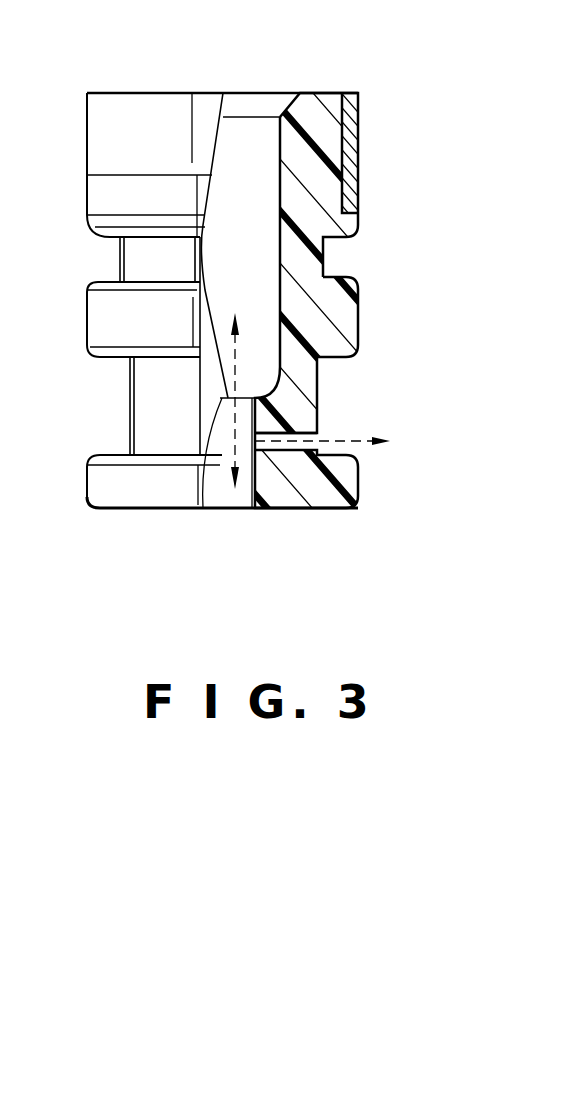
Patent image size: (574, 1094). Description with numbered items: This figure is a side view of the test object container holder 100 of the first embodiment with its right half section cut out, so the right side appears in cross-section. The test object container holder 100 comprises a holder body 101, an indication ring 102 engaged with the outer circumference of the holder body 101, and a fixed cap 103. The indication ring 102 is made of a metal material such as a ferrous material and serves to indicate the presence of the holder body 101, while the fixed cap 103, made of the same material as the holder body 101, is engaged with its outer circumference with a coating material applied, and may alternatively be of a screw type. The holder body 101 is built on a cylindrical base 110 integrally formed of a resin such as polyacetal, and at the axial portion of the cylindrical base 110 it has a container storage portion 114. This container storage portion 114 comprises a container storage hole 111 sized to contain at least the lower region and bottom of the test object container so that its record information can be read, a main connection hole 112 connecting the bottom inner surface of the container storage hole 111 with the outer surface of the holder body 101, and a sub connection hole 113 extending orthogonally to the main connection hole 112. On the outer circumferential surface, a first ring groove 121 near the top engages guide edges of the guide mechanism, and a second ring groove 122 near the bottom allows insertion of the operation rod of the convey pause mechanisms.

The test object container holder 100 is at (181, 72).
The cylindrical base 110 is at (302, 105).
The holder body 101 is at (358, 318).
The indication ring 102 is at (359, 187).
The fixed cap 103 is at (359, 133).
The container storage hole 111 is at (200, 510).
The main connection hole 112 is at (250, 512).
The sub connection hole 113 is at (293, 512).
The container storage portion 114 is at (343, 567).
The first ring groove 121 is at (133, 257).
The second ring groove 122 is at (134, 405).